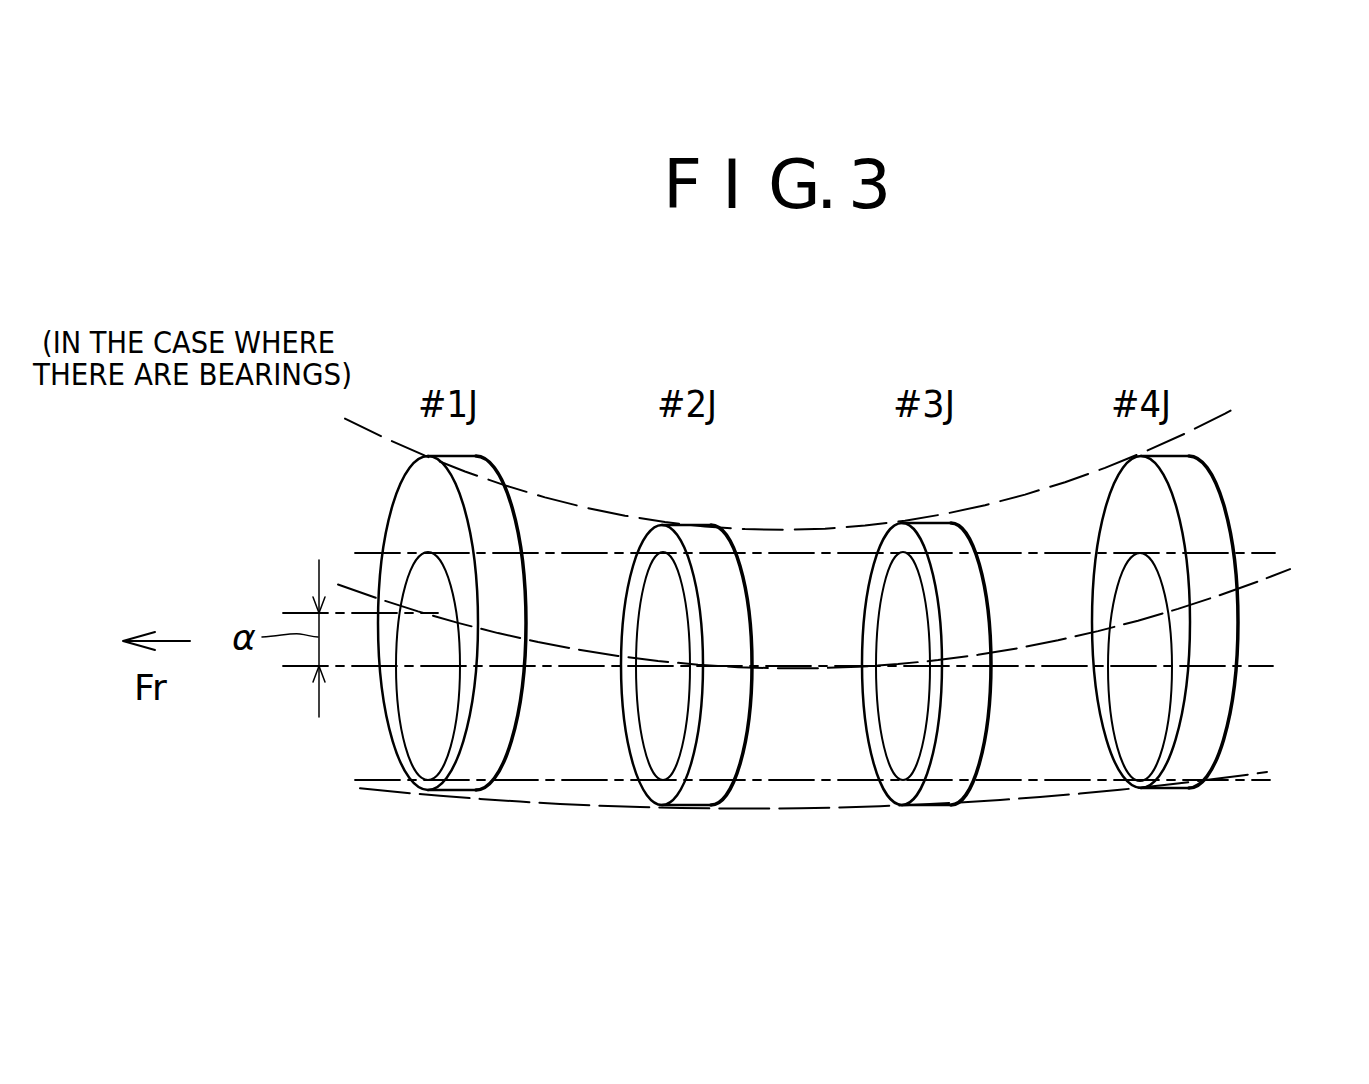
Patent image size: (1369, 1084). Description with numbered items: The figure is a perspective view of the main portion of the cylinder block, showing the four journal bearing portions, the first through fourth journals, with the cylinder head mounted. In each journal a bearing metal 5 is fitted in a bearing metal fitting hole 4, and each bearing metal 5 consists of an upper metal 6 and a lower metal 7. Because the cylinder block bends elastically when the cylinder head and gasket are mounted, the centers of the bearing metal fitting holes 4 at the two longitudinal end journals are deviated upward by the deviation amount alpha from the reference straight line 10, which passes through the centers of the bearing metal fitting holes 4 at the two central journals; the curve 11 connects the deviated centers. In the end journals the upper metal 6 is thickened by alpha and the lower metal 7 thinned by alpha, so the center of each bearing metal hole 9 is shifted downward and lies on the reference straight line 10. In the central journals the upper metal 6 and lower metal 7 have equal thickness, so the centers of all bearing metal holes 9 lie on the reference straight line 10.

The bearing metal fitting hole 4 is at (428, 458).
The bearing metal 5 is at (1213, 466).
The upper metal 6 is at (432, 519).
The lower metal 7 is at (408, 786).
The bearing metal hole 9 is at (428, 553).
The reference straight line 10 is at (1248, 668).
The curve 11 is at (1274, 577).